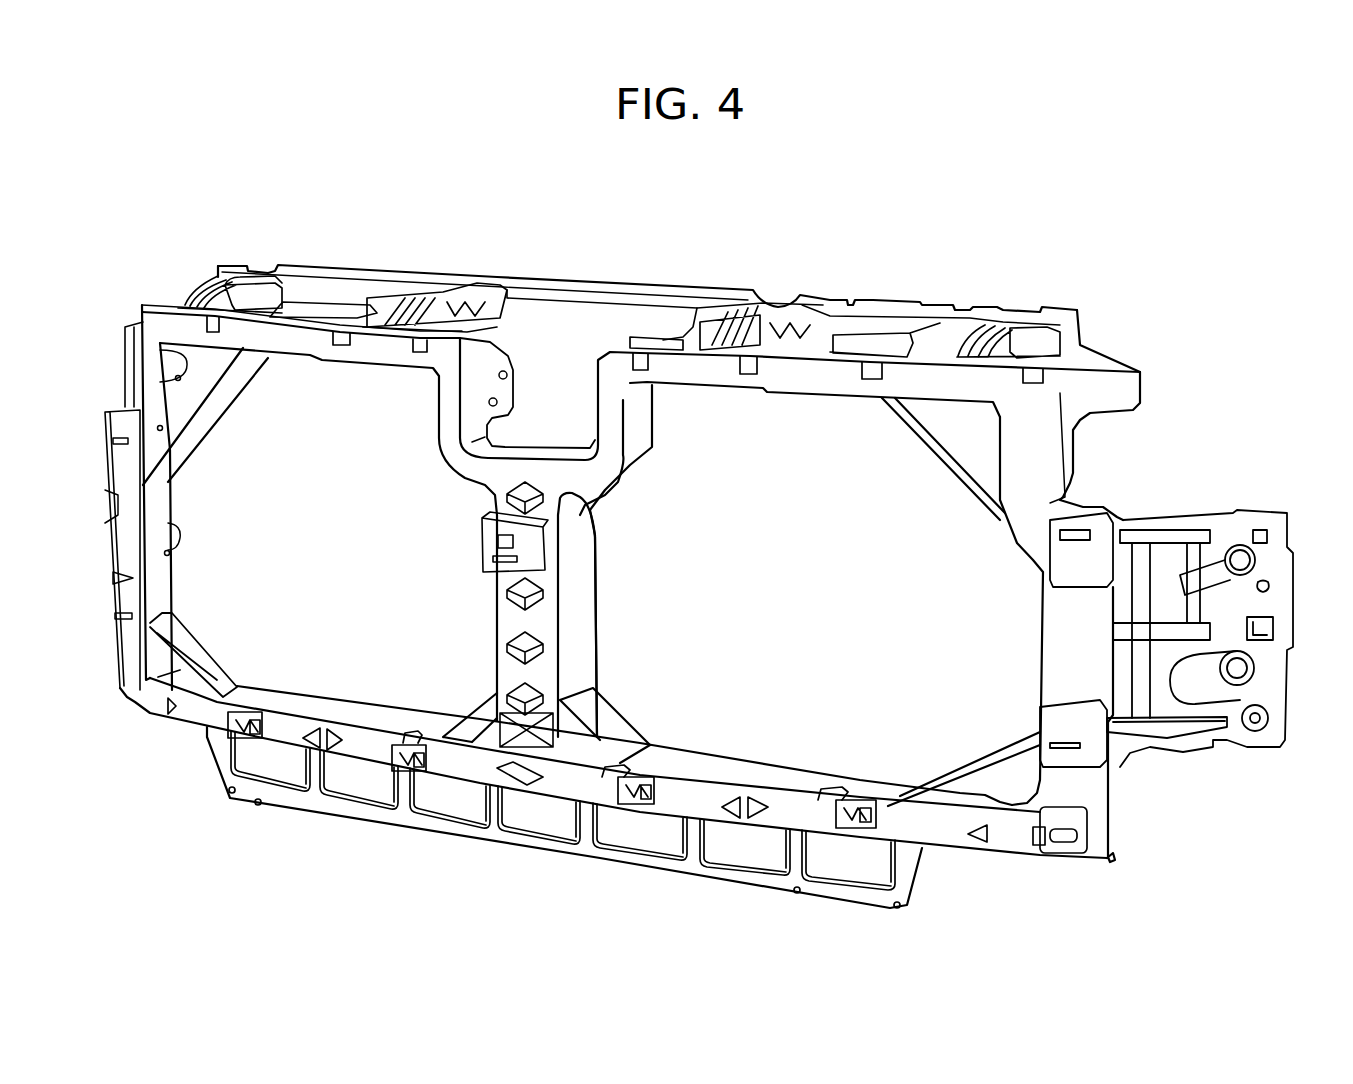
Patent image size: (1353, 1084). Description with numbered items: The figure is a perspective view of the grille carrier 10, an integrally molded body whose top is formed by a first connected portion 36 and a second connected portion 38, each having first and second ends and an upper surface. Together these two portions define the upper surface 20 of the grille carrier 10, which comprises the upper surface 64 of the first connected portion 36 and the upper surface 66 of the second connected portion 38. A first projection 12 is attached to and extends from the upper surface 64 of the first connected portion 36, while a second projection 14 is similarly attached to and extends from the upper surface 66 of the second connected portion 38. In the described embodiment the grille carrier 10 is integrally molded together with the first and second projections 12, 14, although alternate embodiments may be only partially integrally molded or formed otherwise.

The grille carrier 10 is at (1160, 333).
The first projection 12 is at (399, 330).
The second projection 14 is at (808, 340).
The upper surface 20 is at (331, 287).
The first connected portion 36 is at (307, 367).
The second connected portion 38 is at (790, 407).
The upper surface of the first connected portion 64 is at (233, 313).
The upper surface of the second connected portion 66 is at (1060, 357).